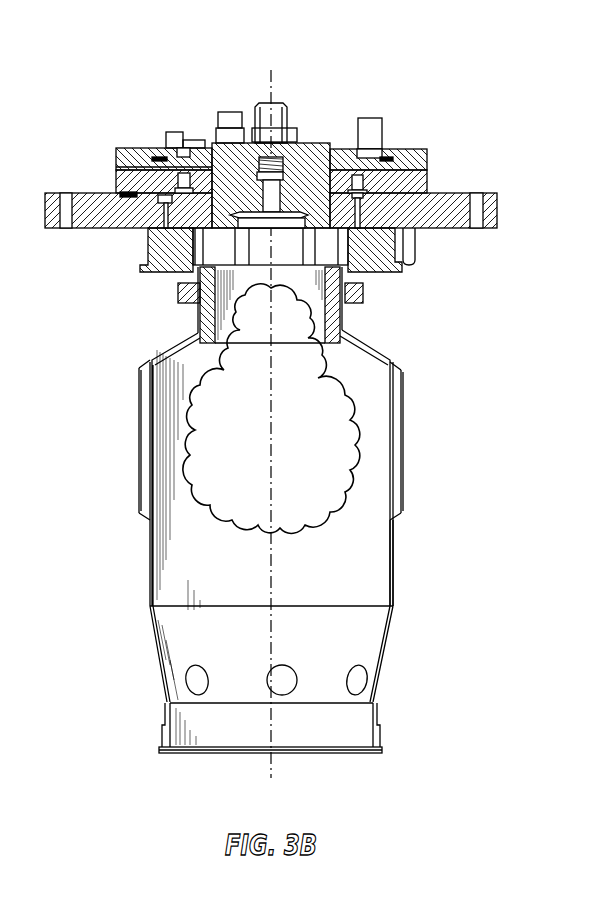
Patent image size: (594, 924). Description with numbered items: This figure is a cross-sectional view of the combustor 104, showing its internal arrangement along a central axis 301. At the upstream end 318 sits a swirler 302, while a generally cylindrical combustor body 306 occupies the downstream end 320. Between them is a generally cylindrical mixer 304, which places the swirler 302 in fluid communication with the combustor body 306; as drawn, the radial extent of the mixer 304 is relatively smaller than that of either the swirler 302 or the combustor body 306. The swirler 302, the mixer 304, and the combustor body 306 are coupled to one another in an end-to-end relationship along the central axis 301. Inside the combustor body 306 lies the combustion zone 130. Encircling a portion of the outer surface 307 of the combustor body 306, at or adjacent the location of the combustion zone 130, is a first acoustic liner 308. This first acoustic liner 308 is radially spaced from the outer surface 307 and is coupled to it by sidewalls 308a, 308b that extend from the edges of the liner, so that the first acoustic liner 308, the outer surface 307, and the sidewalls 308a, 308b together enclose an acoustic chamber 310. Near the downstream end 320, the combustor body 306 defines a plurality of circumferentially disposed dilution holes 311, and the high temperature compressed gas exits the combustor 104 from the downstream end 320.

The combustor 104 is at (490, 92).
The combustion zone 130 is at (253, 441).
The central axis 301 is at (272, 572).
The swirler 302 is at (147, 248).
The mixer 304 is at (200, 325).
The combustor body 306 is at (392, 592).
The outer surface 307 is at (393, 553).
The first acoustic liner 308 is at (403, 460).
The sidewall 308a is at (400, 372).
The sidewall 308b is at (395, 516).
The acoustic chamber 310 is at (397, 418).
The dilution holes 311 is at (357, 666).
The upstream end 318 is at (452, 264).
The downstream end 320 is at (398, 692).